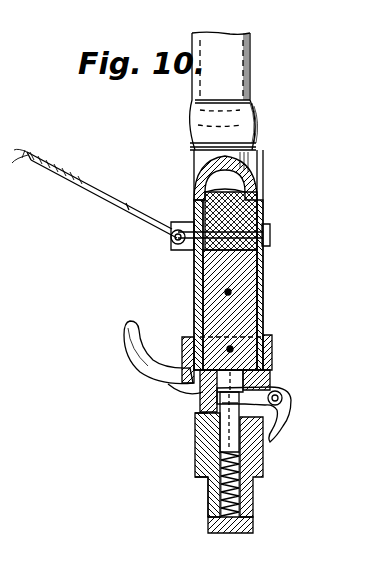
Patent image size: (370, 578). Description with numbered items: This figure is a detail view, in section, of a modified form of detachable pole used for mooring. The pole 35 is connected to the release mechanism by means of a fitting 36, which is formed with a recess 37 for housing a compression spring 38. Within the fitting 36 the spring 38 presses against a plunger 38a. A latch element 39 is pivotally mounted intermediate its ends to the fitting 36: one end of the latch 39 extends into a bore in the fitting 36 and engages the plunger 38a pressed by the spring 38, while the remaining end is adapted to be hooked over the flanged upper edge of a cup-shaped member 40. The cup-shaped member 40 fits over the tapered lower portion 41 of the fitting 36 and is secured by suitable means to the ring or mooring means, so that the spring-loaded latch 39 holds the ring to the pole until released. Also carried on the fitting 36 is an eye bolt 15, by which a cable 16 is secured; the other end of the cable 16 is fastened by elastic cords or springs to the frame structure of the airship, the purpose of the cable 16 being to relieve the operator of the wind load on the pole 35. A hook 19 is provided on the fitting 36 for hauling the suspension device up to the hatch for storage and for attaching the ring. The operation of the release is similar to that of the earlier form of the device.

The pole 35 is at (250, 72).
The fitting 36 is at (264, 298).
The cable 16 is at (76, 184).
The eye bolt 15 is at (170, 251).
The hook 19 is at (140, 361).
The latch element 39 is at (286, 406).
The recess 37 is at (255, 484).
The compression spring 38 is at (255, 514).
The plunger 38a is at (217, 396).
The cup-shaped member 40 is at (198, 426).
The tapered lower portion 41 is at (212, 505).